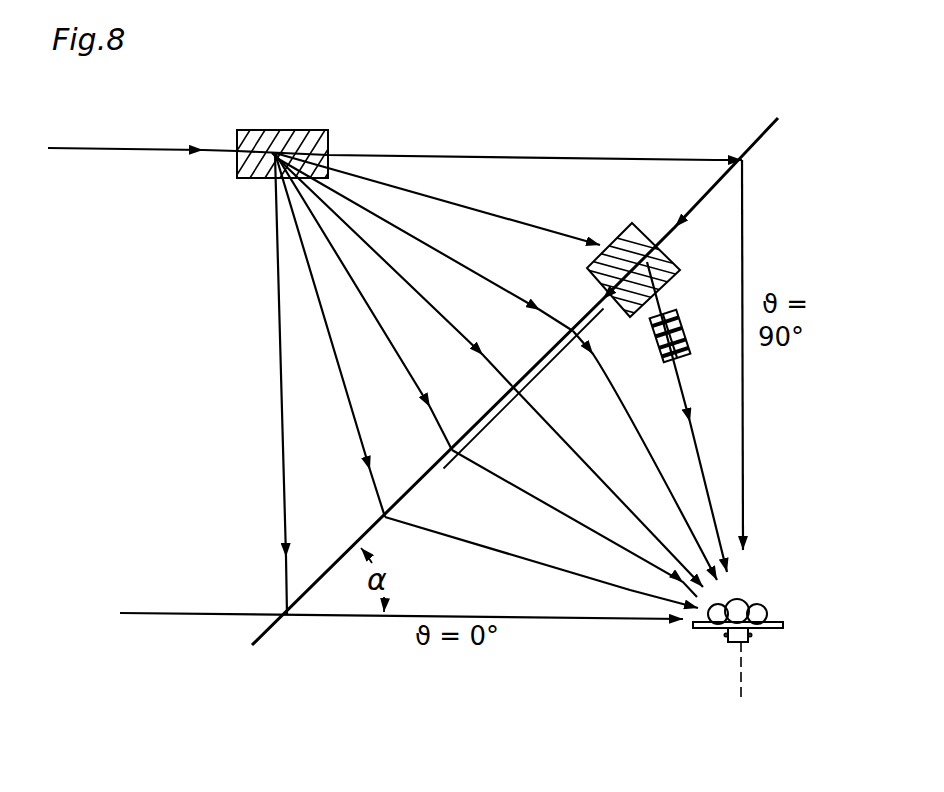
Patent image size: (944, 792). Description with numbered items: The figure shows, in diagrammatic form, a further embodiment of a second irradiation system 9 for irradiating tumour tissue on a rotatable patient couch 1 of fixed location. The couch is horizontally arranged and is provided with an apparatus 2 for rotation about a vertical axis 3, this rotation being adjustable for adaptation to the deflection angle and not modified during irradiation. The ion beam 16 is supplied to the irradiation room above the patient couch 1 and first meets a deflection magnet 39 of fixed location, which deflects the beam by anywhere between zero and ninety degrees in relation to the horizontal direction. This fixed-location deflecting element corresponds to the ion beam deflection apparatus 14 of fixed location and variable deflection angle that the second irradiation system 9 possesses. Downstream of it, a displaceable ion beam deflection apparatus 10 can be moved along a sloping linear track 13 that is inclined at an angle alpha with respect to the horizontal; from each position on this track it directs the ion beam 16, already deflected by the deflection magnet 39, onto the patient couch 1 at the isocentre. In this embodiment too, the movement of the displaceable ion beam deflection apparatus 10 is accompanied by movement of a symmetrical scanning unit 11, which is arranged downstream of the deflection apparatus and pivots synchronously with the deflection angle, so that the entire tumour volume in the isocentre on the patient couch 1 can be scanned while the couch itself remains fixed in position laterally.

The patient couch 1 is at (773, 627).
The apparatus for rotation 2 is at (745, 645).
The vertical axis 3 is at (740, 652).
The second irradiation system 9 is at (541, 132).
The ion beam deflection apparatus 10 is at (697, 243).
The symmetrical scanning unit 11 is at (690, 333).
The sloping linear track 13 is at (703, 198).
The ion beam deflection apparatus of fixed location 14 is at (333, 131).
The ion beam 16 is at (105, 142).
The deflection magnet of fixed location 39 is at (233, 128).